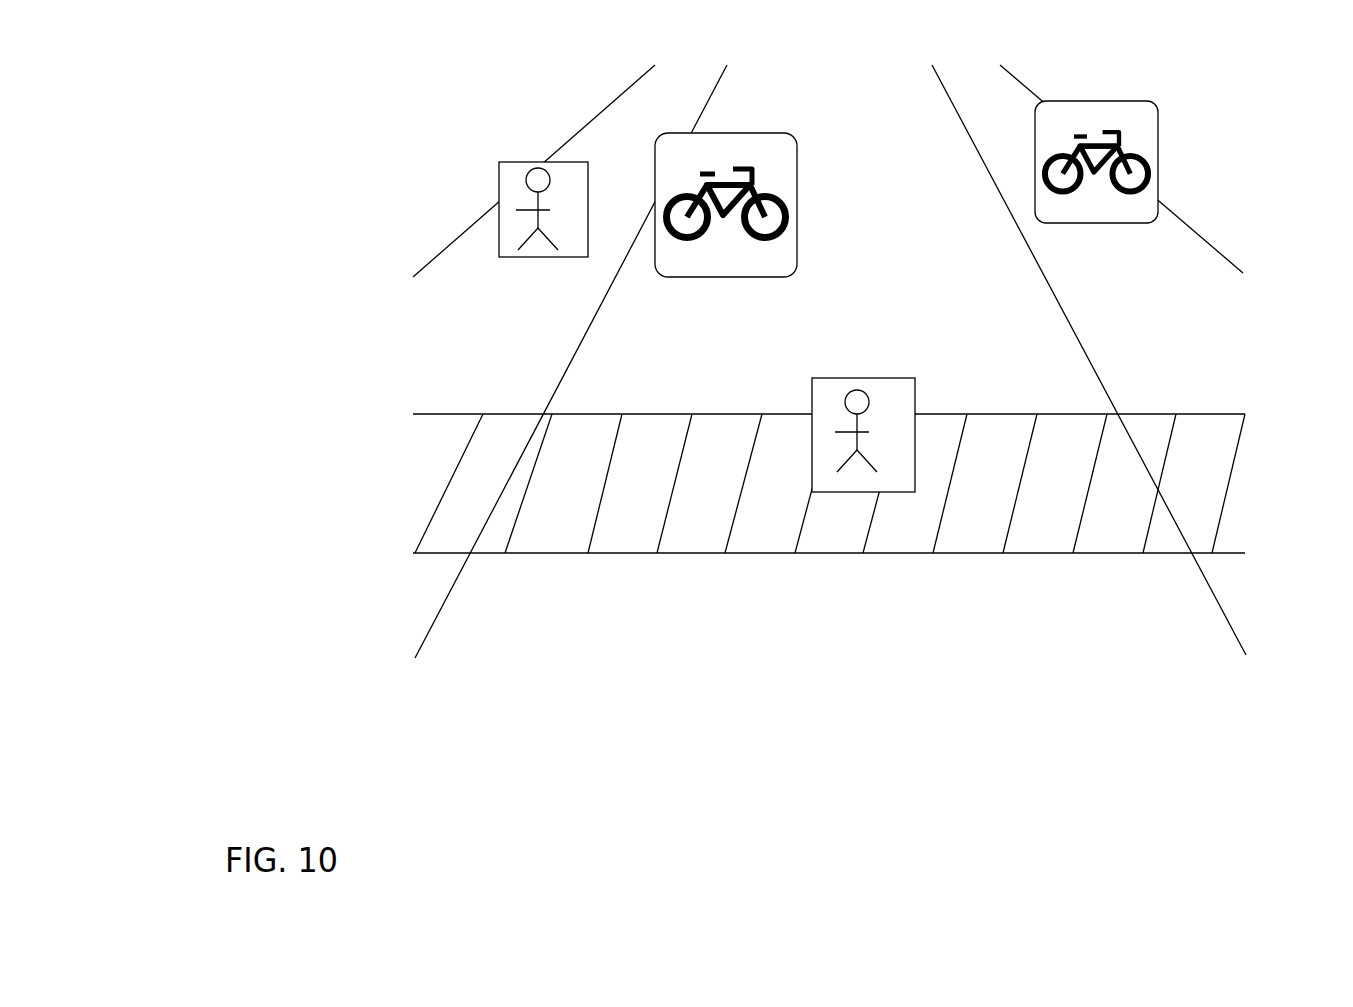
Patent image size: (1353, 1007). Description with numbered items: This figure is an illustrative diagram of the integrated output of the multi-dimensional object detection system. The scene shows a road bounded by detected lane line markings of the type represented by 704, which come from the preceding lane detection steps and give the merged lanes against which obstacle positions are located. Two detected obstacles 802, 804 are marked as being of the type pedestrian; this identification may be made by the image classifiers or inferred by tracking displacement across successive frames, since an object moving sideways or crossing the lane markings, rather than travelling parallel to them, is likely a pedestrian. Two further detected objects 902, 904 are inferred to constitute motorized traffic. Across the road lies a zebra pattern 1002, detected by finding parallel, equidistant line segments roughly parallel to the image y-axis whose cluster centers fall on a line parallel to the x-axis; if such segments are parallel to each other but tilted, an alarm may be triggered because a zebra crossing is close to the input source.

The line markings 704 is at (1175, 210).
The pedestrian obstacle 802 is at (568, 162).
The pedestrian obstacle 804 is at (862, 378).
The motorized traffic object 902 is at (1158, 113).
The motorized traffic object 904 is at (797, 185).
The zebra pattern 1002 is at (1178, 413).